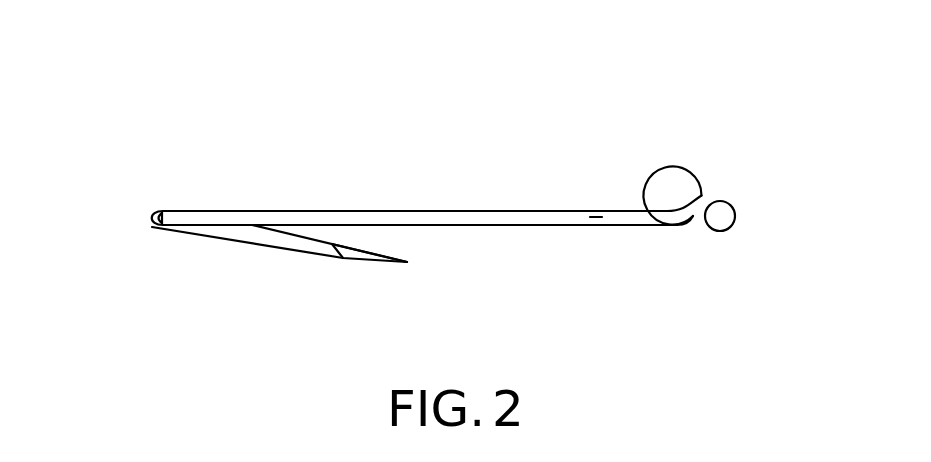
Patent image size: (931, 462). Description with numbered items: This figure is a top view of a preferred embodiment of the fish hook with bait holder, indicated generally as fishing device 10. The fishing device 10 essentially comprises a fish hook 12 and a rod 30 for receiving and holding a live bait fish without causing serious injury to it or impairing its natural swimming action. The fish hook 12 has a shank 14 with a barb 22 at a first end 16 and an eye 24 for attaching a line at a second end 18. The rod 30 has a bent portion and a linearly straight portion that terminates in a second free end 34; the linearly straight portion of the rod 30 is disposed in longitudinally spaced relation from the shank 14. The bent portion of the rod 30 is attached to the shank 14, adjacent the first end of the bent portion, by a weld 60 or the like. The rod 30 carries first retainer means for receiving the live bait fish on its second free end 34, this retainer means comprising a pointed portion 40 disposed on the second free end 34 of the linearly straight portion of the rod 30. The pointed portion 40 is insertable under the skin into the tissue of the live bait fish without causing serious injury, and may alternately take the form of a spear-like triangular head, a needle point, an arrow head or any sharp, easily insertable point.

The fishing device 10 is at (448, 192).
The fish hook 12 is at (658, 211).
The shank 14 is at (636, 211).
The first end 16 is at (407, 262).
The second end 18 is at (743, 232).
The barb 22 is at (328, 244).
The eye 24 is at (722, 215).
The rod 30 is at (370, 210).
The second free end 34 is at (613, 215).
The pointed portion 40 is at (613, 217).
The weld 60 is at (150, 218).